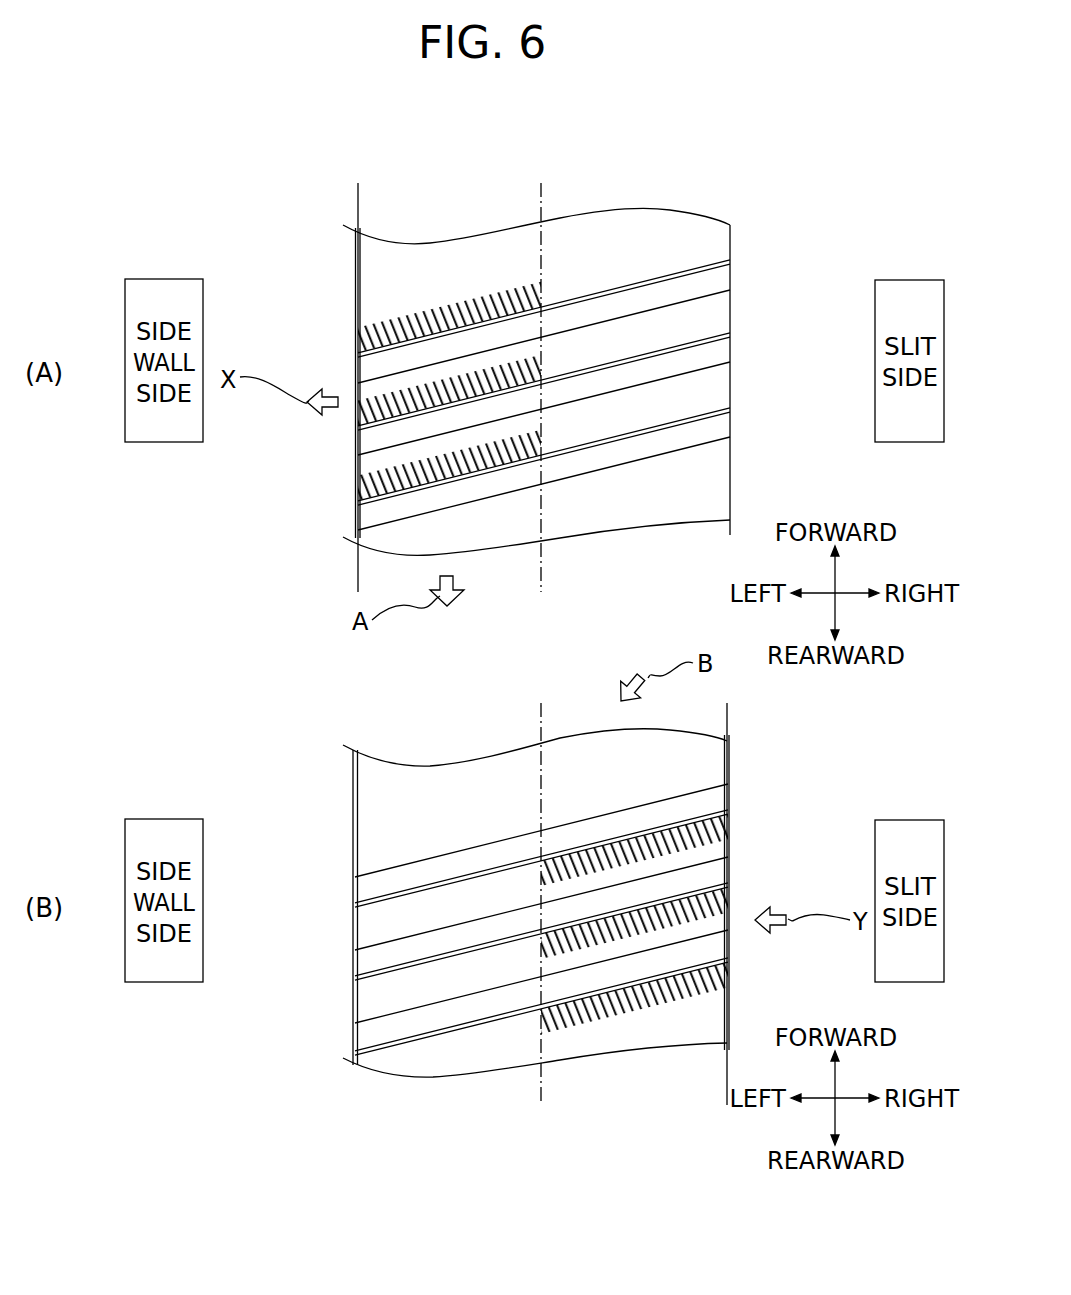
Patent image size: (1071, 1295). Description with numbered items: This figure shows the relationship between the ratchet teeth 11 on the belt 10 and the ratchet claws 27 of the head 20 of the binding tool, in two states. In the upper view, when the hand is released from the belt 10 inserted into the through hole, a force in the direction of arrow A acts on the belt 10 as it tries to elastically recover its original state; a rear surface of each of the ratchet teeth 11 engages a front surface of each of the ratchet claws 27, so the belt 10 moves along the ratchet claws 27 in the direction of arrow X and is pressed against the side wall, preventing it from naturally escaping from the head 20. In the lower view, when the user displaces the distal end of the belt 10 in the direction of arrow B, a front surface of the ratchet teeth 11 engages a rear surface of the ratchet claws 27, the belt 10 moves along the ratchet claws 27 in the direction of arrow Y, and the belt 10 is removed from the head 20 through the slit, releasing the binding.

The belt 10 is at (541, 185).
The ratchet teeth 11 is at (358, 340).
The head 20 is at (738, 240).
The ratchet claws 27 is at (740, 276).